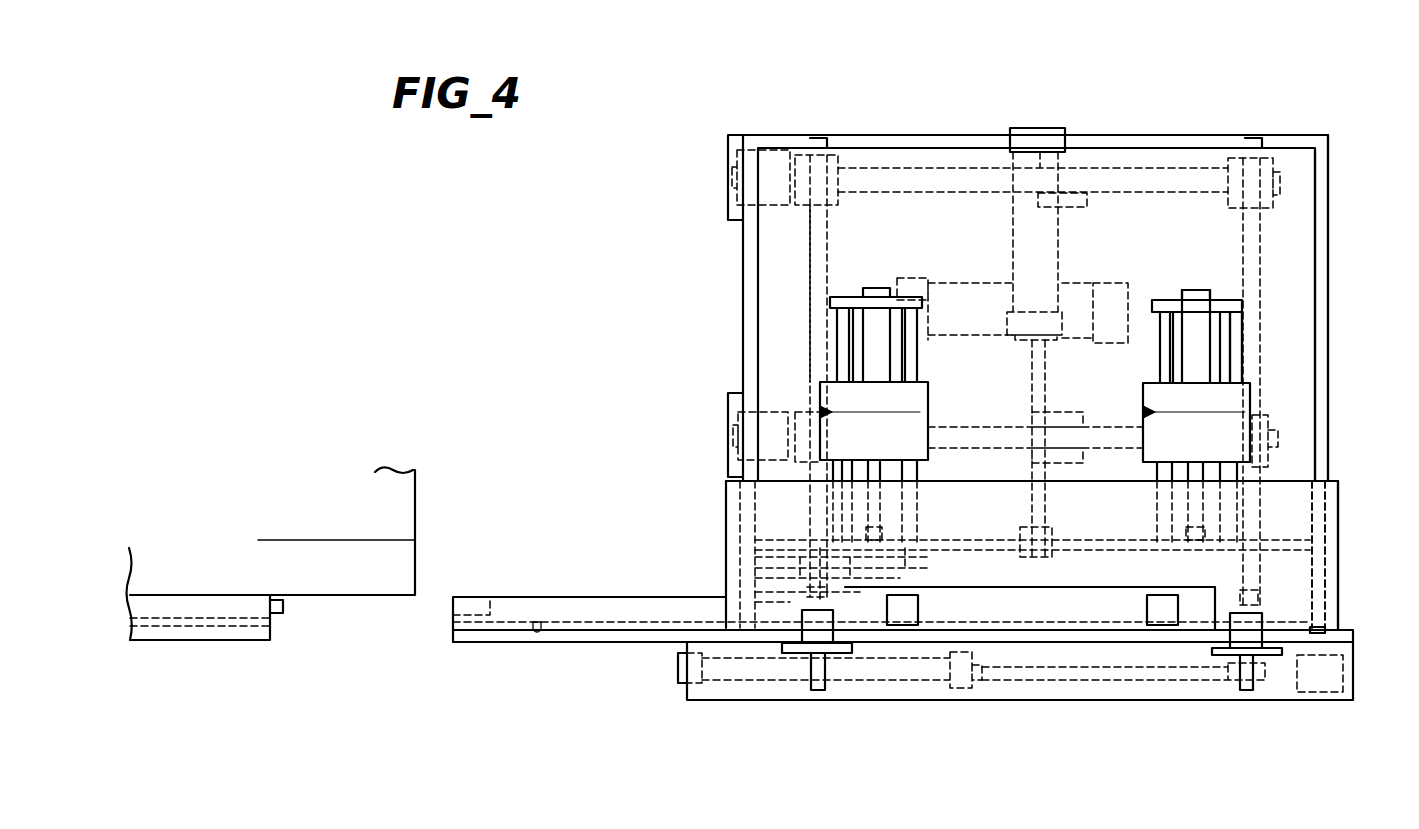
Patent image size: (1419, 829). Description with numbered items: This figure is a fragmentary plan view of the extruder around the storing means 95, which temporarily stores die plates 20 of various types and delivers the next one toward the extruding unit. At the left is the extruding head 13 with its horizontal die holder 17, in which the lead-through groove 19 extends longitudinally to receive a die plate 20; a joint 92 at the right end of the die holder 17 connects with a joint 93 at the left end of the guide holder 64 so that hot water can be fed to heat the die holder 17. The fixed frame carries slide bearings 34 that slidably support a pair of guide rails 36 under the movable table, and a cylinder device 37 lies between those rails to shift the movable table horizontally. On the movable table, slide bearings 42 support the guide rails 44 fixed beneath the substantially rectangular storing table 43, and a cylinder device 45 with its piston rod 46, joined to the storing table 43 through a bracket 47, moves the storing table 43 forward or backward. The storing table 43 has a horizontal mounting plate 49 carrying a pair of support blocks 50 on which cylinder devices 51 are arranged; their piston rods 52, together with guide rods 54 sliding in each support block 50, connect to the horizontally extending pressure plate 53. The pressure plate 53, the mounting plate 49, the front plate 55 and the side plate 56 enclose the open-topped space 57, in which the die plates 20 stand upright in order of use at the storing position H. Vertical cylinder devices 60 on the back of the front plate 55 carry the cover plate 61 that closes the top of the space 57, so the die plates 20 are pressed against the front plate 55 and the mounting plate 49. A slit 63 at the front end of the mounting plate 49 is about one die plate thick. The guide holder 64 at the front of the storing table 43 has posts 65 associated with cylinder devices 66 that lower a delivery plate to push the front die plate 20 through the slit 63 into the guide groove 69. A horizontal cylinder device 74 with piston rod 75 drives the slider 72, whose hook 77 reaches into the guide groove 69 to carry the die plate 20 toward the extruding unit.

The extruding head 13 is at (410, 470).
The die holder 17 is at (232, 598).
The lead-through groove 19 is at (222, 640).
The joint 92 is at (283, 607).
The joint 93 is at (492, 601).
The guide groove 69 is at (540, 622).
The guide holder 64 is at (625, 600).
The die plate 20 is at (755, 570).
The storing position H is at (790, 525).
The slide bearings 34 is at (775, 150).
The slide bearings 42 is at (836, 153).
The guide rails 36 is at (922, 168).
The storing means 95 is at (1130, 132).
The storing table 43 is at (1278, 132).
The guide rails 44 is at (828, 290).
The cylinder device 37 is at (948, 283).
The cylinder device 45 is at (1058, 285).
The cylinder devices 51 is at (1196, 300).
The guide rods 54 is at (1228, 336).
The side plate 56 is at (750, 333).
The mounting plate 49 is at (1285, 346).
The piston rod 46 is at (1045, 385).
The support blocks 50 is at (1160, 402).
The cover plate 61 is at (1295, 490).
The pressure plate 53 is at (1088, 542).
The bracket 47 is at (1050, 555).
The piston rods 52 is at (1196, 525).
The space 57 is at (1300, 577).
The hook 77 is at (1320, 620).
The front plate 55 is at (1353, 635).
The cylinder devices 60 is at (920, 606).
The cylinder devices 66 is at (802, 630).
The posts 65 is at (830, 668).
The cylinder device 74 is at (915, 682).
The piston rod 75 is at (1045, 680).
The slit 63 is at (1118, 630).
The slider 72 is at (1320, 693).